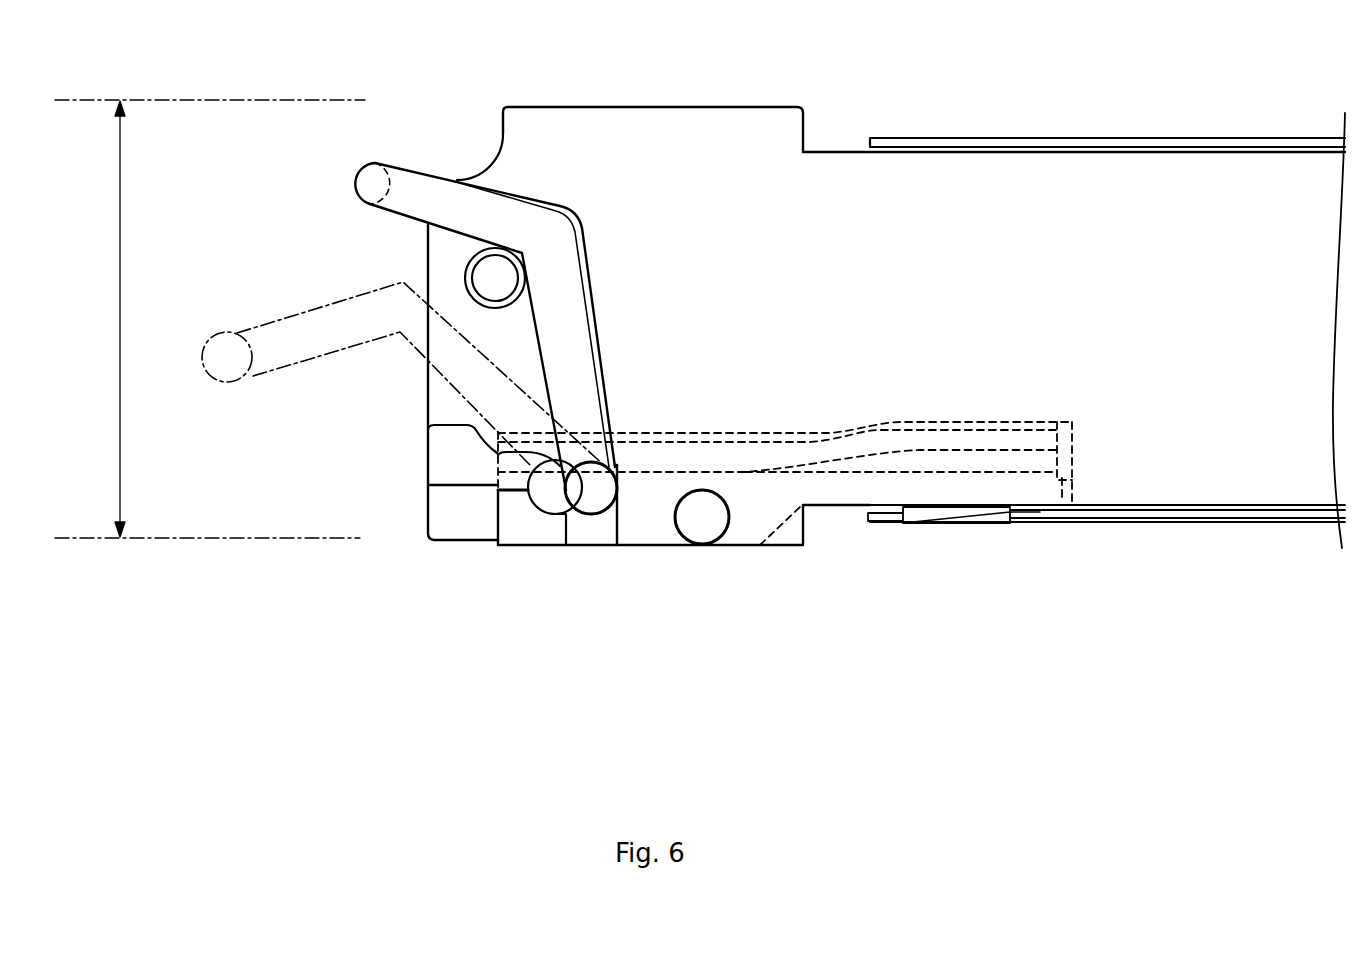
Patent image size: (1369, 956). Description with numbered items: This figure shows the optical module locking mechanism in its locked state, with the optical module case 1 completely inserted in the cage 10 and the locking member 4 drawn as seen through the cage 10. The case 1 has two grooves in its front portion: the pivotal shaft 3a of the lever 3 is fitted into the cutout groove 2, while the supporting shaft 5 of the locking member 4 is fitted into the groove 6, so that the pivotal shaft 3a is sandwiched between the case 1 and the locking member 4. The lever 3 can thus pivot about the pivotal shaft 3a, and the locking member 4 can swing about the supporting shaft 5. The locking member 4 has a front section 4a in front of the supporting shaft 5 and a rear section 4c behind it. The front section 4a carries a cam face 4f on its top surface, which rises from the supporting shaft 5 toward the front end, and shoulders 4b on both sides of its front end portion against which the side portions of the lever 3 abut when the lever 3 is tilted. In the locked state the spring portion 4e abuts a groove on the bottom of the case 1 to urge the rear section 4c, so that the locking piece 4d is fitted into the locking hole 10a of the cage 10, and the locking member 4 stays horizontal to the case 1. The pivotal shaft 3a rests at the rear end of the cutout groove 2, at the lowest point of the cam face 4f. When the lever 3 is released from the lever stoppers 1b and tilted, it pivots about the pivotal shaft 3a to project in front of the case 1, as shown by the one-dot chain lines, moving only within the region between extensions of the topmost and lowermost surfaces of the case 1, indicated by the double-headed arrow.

The optical module case 1 is at (752, 127).
The lever stopper 1b is at (467, 266).
The cutout groove 2 is at (572, 495).
The lever 3 is at (410, 178).
The pivotal shaft 3a is at (615, 467).
The locking member 4 is at (828, 490).
The front section 4a is at (445, 517).
The shoulders 4b is at (448, 424).
The rear section 4c is at (1057, 488).
The locking piece 4d is at (918, 518).
The spring portion 4e is at (1057, 440).
The cam face 4f is at (498, 455).
The supporting shaft 5 is at (700, 533).
The groove 6 is at (705, 500).
The cage 10 is at (1096, 138).
The locking hole 10a is at (993, 517).